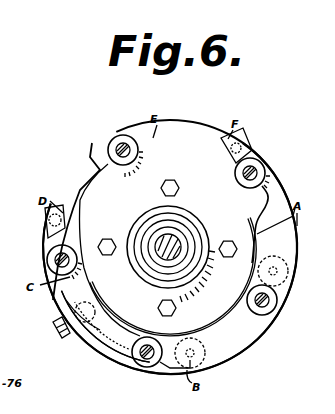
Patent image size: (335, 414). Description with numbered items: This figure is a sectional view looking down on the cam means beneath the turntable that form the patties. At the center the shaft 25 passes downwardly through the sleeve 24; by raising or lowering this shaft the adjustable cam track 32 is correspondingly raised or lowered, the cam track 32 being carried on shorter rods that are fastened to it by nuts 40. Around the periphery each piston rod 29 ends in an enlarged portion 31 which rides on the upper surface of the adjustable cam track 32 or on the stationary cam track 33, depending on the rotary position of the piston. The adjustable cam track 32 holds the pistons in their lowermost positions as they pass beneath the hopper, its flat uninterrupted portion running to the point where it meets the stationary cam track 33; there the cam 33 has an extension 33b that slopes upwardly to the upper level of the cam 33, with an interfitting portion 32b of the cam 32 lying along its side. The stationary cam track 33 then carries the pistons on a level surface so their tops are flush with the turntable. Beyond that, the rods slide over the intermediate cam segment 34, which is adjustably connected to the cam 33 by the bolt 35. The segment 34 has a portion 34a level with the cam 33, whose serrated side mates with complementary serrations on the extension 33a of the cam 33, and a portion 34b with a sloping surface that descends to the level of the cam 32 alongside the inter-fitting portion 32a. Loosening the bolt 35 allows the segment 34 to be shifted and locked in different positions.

The sleeve 24 is at (183, 258).
The shaft 25 is at (160, 237).
The piston rod 29 is at (110, 149).
The enlarged portion of the piston rod 31 is at (121, 137).
The adjustable cam track 32 is at (93, 200).
The inter-fitting portion of the adjustable cam 32a is at (75, 242).
The interfitting portion of the adjustable cam 32b is at (230, 168).
The stationary cam track 33 is at (237, 348).
The extension of the stationary cam 33a is at (104, 318).
The extension of the stationary cam 33b is at (274, 188).
The intermediate cam segment 34 is at (57, 309).
The level portion of the cam segment 34a is at (132, 361).
The sloping portion of the cam segment 34b is at (48, 222).
The bolt 35 is at (63, 336).
The nut 40 is at (180, 189).